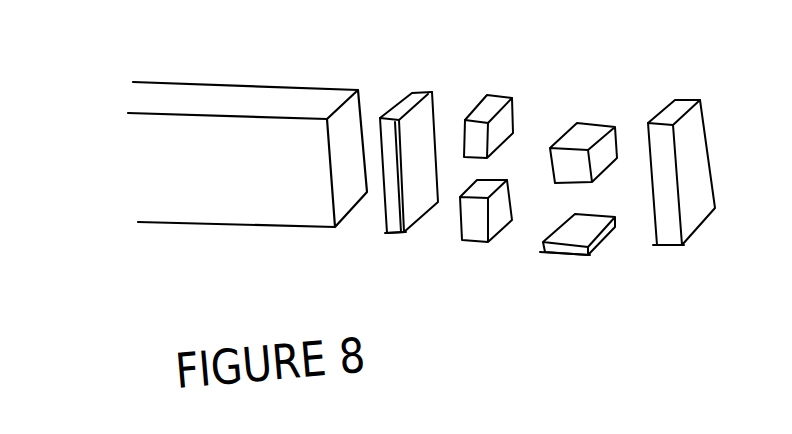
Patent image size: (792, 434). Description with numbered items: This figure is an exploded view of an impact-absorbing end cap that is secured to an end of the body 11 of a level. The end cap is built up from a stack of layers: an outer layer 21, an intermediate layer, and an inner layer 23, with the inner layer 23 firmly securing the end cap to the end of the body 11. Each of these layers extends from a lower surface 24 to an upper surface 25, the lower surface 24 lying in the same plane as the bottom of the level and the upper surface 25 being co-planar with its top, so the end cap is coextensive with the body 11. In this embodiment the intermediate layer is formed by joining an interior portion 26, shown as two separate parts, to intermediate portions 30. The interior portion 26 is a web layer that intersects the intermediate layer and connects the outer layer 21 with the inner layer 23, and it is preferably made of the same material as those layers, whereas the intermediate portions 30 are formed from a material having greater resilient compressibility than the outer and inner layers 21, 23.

The body 11 is at (282, 97).
The outer layer 21 is at (695, 168).
The inner layer 23 is at (395, 223).
The lower surface 24 is at (417, 223).
The upper surface 25 is at (410, 100).
The interior portion 26 is at (587, 135).
The intermediate portions 30 is at (503, 125).